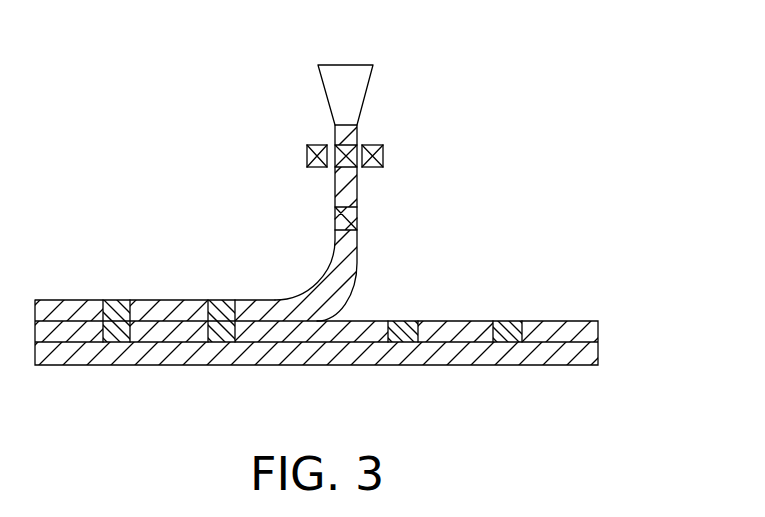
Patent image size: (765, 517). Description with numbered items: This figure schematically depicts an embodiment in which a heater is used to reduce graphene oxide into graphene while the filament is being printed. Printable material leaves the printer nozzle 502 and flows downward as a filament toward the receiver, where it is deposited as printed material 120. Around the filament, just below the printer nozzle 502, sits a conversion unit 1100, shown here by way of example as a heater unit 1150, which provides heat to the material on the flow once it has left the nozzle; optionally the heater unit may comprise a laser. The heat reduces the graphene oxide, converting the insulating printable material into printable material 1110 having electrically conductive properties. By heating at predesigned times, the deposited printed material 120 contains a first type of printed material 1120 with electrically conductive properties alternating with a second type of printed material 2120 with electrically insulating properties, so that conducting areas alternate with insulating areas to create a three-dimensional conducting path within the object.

The printer nozzle 502 is at (313, 86).
The conversion unit 1100 is at (394, 139).
The heater unit 1150 is at (390, 142).
The printable material having electrically conductive properties 1110 is at (357, 218).
The second type of printed material 2120 is at (468, 288).
The first type of printed material 1120 is at (512, 322).
The printed material 120 is at (645, 328).